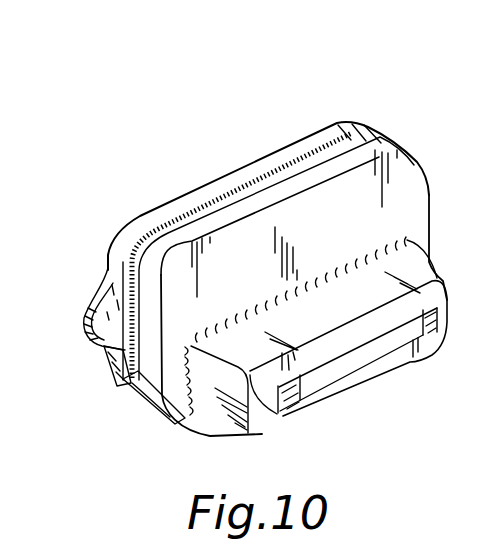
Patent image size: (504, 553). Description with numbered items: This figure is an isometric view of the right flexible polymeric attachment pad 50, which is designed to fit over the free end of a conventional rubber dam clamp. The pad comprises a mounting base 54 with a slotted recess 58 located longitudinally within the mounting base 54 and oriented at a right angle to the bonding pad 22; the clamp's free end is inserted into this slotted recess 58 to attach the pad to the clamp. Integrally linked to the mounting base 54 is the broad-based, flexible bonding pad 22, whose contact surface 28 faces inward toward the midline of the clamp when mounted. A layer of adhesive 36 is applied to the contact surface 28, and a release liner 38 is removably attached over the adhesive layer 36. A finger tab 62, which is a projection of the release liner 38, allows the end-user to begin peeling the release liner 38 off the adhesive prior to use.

The polymeric attachment pad 50 is at (373, 122).
The bonding pad 22 is at (268, 193).
The release liner 38 is at (168, 208).
The layer of adhesive 36 is at (140, 238).
The finger tab 62 is at (103, 341).
The contact surface 28 is at (122, 392).
The mounting base 54 is at (222, 415).
The slotted recess 58 is at (356, 361).